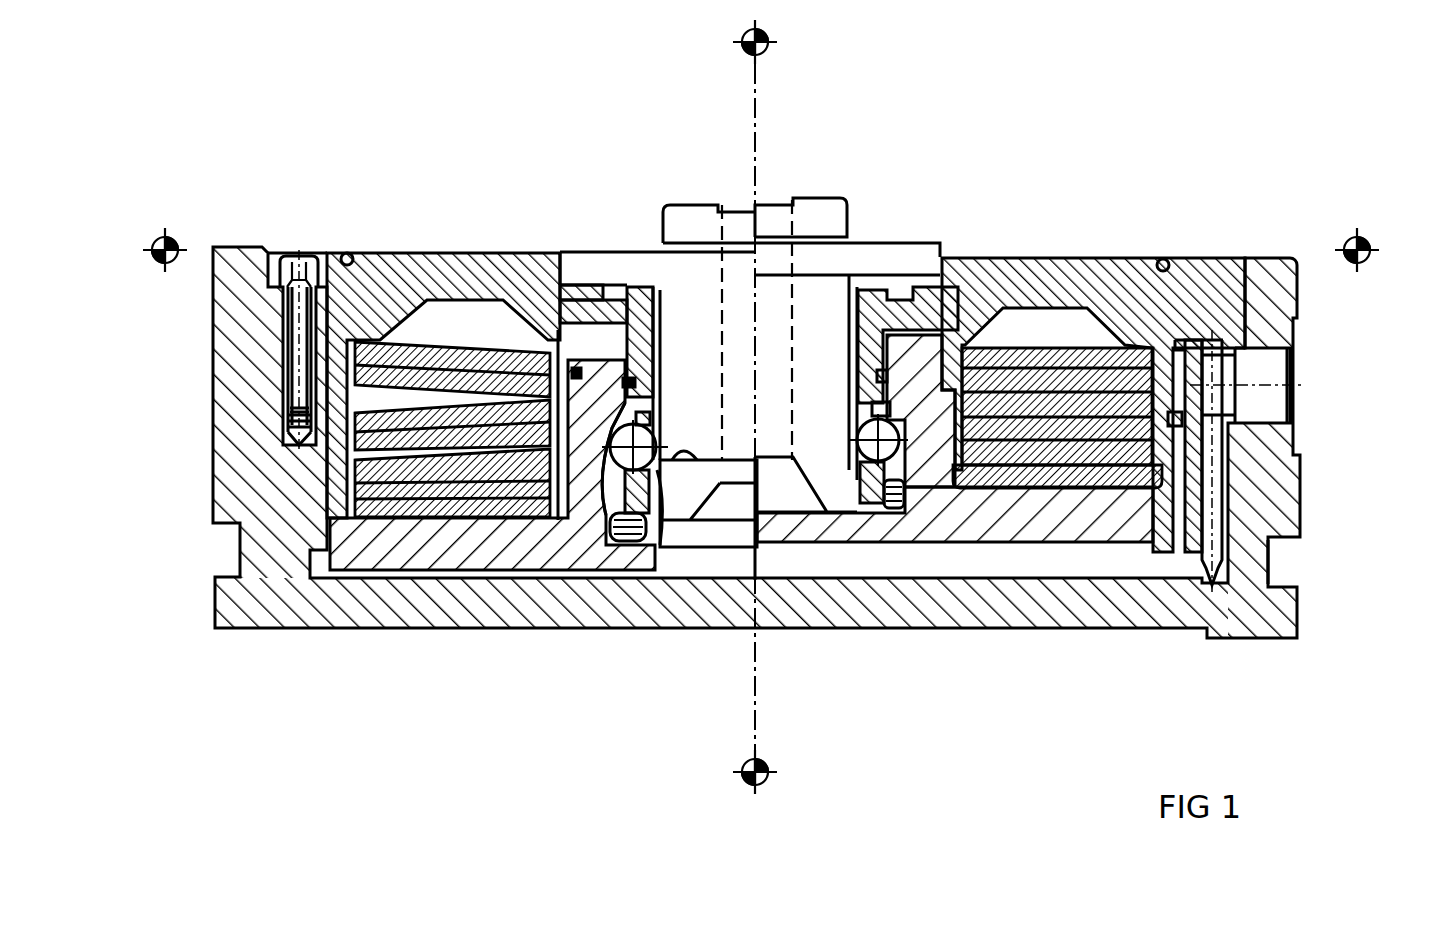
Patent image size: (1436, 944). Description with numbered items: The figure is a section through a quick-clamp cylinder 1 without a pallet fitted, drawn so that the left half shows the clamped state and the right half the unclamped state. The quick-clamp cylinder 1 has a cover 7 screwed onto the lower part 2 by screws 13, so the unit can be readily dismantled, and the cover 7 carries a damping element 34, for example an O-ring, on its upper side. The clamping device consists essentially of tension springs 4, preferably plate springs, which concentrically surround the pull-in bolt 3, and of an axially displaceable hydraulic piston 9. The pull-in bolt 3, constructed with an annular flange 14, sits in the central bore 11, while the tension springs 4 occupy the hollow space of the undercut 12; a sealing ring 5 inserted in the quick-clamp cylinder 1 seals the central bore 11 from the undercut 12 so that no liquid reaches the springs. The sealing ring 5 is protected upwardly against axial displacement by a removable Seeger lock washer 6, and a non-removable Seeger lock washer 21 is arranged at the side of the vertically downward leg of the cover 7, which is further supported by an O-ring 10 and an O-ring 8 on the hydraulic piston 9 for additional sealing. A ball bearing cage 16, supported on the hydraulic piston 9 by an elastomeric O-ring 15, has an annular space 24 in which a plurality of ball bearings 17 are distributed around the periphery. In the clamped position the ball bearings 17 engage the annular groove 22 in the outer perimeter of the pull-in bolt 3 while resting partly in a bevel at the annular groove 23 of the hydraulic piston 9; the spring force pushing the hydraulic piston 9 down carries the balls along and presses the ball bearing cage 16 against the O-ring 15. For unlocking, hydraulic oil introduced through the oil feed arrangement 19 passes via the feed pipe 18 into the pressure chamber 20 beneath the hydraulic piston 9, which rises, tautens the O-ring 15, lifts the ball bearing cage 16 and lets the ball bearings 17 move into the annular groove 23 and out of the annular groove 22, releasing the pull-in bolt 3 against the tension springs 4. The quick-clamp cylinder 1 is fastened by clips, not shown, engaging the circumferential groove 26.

The quick-clamp cylinder 1 is at (898, 212).
The lower part 2 is at (297, 598).
The pull-in bolt 3 is at (685, 338).
The tension springs 4 is at (302, 408).
The sealing ring 5 is at (610, 257).
The Seeger lock washer 6 is at (573, 257).
The cover 7 is at (428, 253).
The O-ring 8 is at (497, 253).
The hydraulic piston 9 is at (423, 537).
The O-ring 10 is at (592, 455).
The central bore 11 is at (903, 290).
The undercut 12 is at (1042, 322).
The screws 13 is at (297, 250).
The annular flange 14 is at (686, 462).
The O-ring 15 is at (633, 500).
The ball bearing cage 16 is at (855, 510).
The ball bearings 17 is at (620, 480).
The feed pipe 18 is at (1220, 505).
The oil feed arrangement 19 is at (1265, 375).
The pressure chamber 20 is at (968, 552).
The Seeger lock washer 21 is at (525, 257).
The annular groove 22 is at (632, 548).
The annular groove 23 is at (893, 500).
The annular space 24 is at (600, 468).
The circumferential groove 26 is at (1287, 558).
The damping element 34 is at (1165, 256).